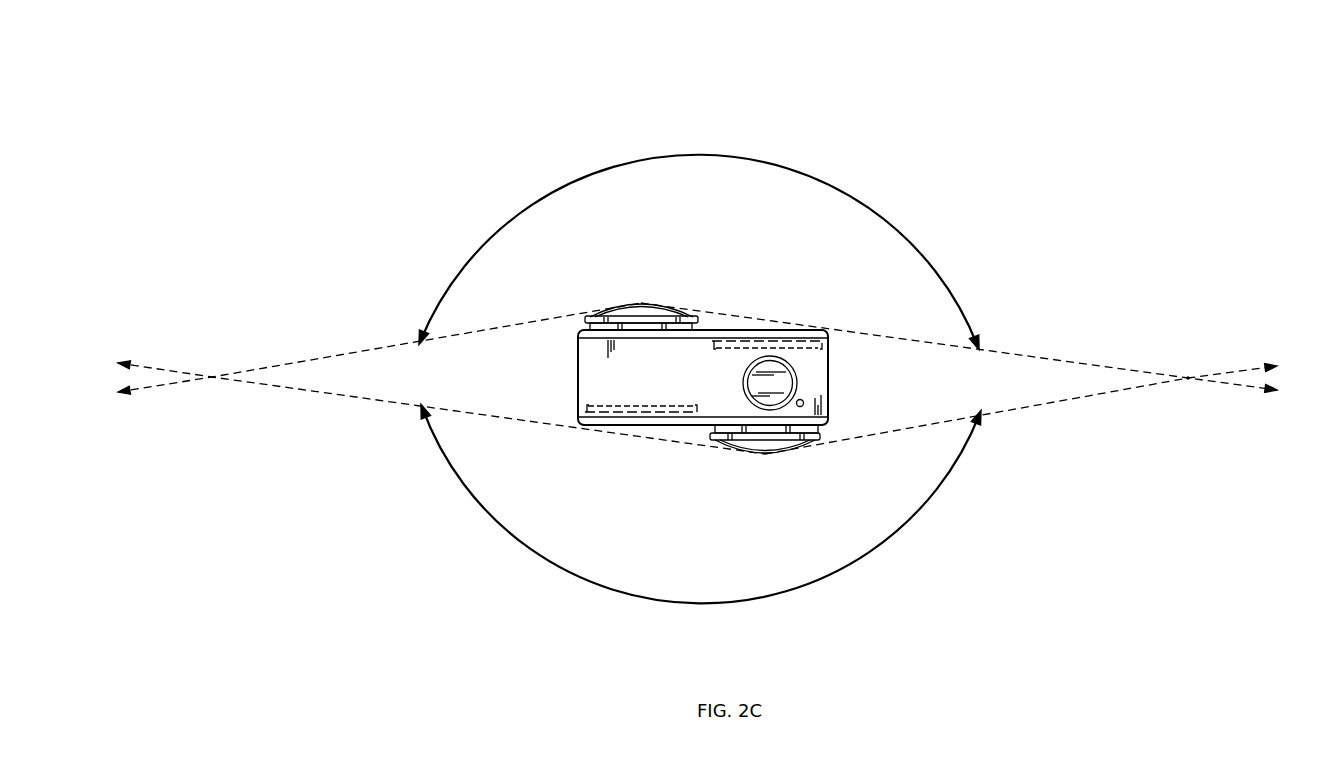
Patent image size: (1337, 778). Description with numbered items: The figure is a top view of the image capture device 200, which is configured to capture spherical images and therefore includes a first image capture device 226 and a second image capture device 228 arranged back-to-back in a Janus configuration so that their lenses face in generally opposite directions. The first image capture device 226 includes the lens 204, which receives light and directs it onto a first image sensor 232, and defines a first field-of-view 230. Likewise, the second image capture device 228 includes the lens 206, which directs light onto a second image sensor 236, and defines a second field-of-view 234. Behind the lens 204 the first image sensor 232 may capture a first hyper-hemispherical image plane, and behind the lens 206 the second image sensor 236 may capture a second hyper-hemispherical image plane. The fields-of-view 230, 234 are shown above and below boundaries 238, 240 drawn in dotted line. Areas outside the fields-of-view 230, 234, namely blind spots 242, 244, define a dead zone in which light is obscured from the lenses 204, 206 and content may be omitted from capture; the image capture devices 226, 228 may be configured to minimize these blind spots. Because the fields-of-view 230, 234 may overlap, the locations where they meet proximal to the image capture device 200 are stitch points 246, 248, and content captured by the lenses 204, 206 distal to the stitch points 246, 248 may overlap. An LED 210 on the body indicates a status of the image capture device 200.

The image capture device 200 is at (1197, 110).
The lens 204 is at (666, 307).
The lens 206 is at (743, 452).
The LED 210 is at (800, 407).
The first image capture device 226 is at (638, 298).
The second image capture device 228 is at (777, 455).
The first field-of-view 230 is at (633, 593).
The first image sensor 232 is at (615, 410).
The second field-of-view 234 is at (815, 177).
The second image sensor 236 is at (790, 343).
The boundary 238 is at (1097, 395).
The boundary 240 is at (1135, 370).
The blind spot 242 is at (497, 388).
The blind spot 244 is at (890, 397).
The stitch point 246 is at (212, 378).
The stitch point 248 is at (1188, 378).